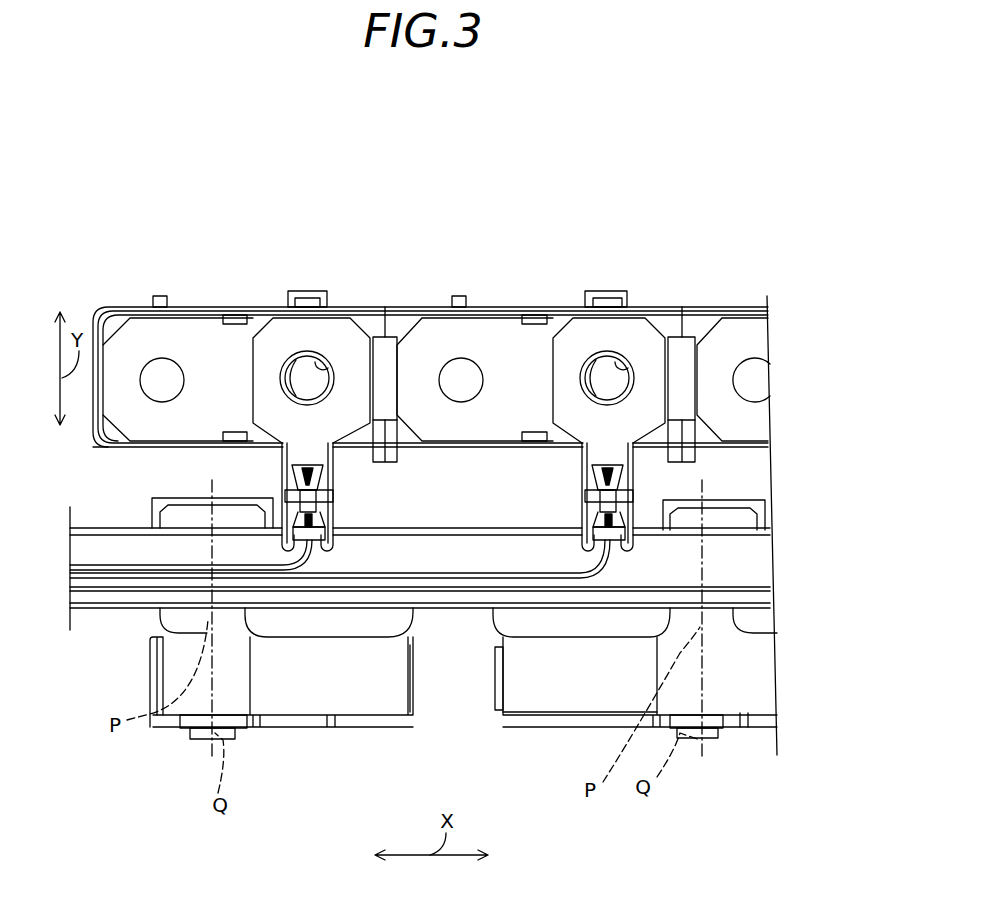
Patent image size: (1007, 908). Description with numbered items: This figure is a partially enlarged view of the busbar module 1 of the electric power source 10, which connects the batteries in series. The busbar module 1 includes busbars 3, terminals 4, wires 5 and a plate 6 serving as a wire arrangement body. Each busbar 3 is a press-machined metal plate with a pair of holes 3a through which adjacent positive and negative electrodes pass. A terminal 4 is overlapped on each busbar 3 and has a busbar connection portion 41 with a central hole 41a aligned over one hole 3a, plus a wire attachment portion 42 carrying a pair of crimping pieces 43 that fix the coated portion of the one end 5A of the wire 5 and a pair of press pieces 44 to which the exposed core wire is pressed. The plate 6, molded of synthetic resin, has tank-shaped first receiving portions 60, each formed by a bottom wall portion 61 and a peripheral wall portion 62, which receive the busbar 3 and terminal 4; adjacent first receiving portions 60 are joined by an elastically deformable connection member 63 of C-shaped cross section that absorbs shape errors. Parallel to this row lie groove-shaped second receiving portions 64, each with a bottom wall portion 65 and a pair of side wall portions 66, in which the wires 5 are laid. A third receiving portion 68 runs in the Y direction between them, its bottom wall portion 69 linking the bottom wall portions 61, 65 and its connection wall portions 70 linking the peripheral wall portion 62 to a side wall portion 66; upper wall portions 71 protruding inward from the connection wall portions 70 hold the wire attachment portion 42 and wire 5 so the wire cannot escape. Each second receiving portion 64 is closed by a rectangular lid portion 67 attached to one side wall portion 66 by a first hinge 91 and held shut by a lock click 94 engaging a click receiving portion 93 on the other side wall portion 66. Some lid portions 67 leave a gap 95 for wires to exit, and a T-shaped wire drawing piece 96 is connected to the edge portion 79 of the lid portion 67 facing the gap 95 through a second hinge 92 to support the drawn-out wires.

The busbar module 1 is at (674, 227).
The busbar 3 is at (217, 337).
The hole 3a is at (163, 363).
The terminal 4 is at (309, 337).
The wire 5 is at (160, 567).
The one end of the wire 5A is at (313, 552).
The plate 6 is at (735, 298).
The electric power source 10 is at (714, 141).
The busbar connection portion 41 is at (293, 357).
The hole 41a is at (323, 360).
The wire attachment portion 42 is at (287, 437).
The crimping piece 43 is at (296, 528).
The press piece 44 is at (300, 500).
The first receiving portion 60 is at (148, 226).
The bottom wall portion 61 is at (403, 317).
The peripheral wall portion 62 is at (430, 310).
The connection member 63 is at (385, 337).
The second receiving portion 64 is at (103, 460).
The bottom wall portion 65 is at (147, 550).
The side wall portion 66 is at (140, 603).
The lid portion 67 is at (273, 682).
The third receiving portion 68 is at (385, 465).
The bottom wall portion 69 is at (320, 483).
The connection wall portion 70 is at (337, 502).
The upper wall portion 71 is at (300, 508).
The edge portion 79 is at (493, 630).
The first hinge 91 is at (197, 622).
The second hinge 92 is at (508, 720).
The click receiving portion 93 is at (187, 490).
The lock click 94 is at (200, 742).
The gap 95 is at (420, 700).
The wire drawing piece 96 is at (495, 680).